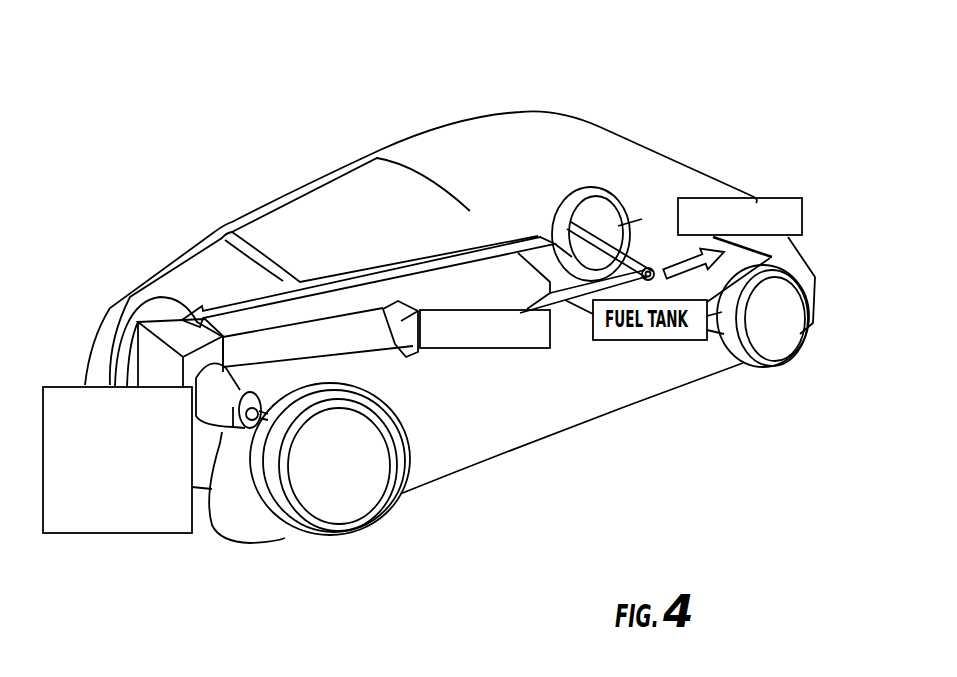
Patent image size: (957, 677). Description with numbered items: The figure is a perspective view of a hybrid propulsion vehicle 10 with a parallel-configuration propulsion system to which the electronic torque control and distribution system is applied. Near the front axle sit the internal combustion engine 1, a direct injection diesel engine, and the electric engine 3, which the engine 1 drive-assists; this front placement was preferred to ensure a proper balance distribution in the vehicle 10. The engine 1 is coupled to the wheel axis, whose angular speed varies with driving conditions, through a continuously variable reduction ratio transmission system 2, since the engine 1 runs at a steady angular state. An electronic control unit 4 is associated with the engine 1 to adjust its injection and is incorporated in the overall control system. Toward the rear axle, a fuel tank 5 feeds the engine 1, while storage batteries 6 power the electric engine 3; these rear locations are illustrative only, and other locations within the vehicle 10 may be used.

The internal combustion engine 1 is at (133, 426).
The continuously variable reduction ratio transmission system 2 is at (232, 395).
The electric engine 3 is at (320, 333).
The electronic control unit 4 is at (480, 313).
The tank 5 is at (587, 268).
The storage batteries 6 is at (678, 218).
The vehicle 10 is at (678, 118).